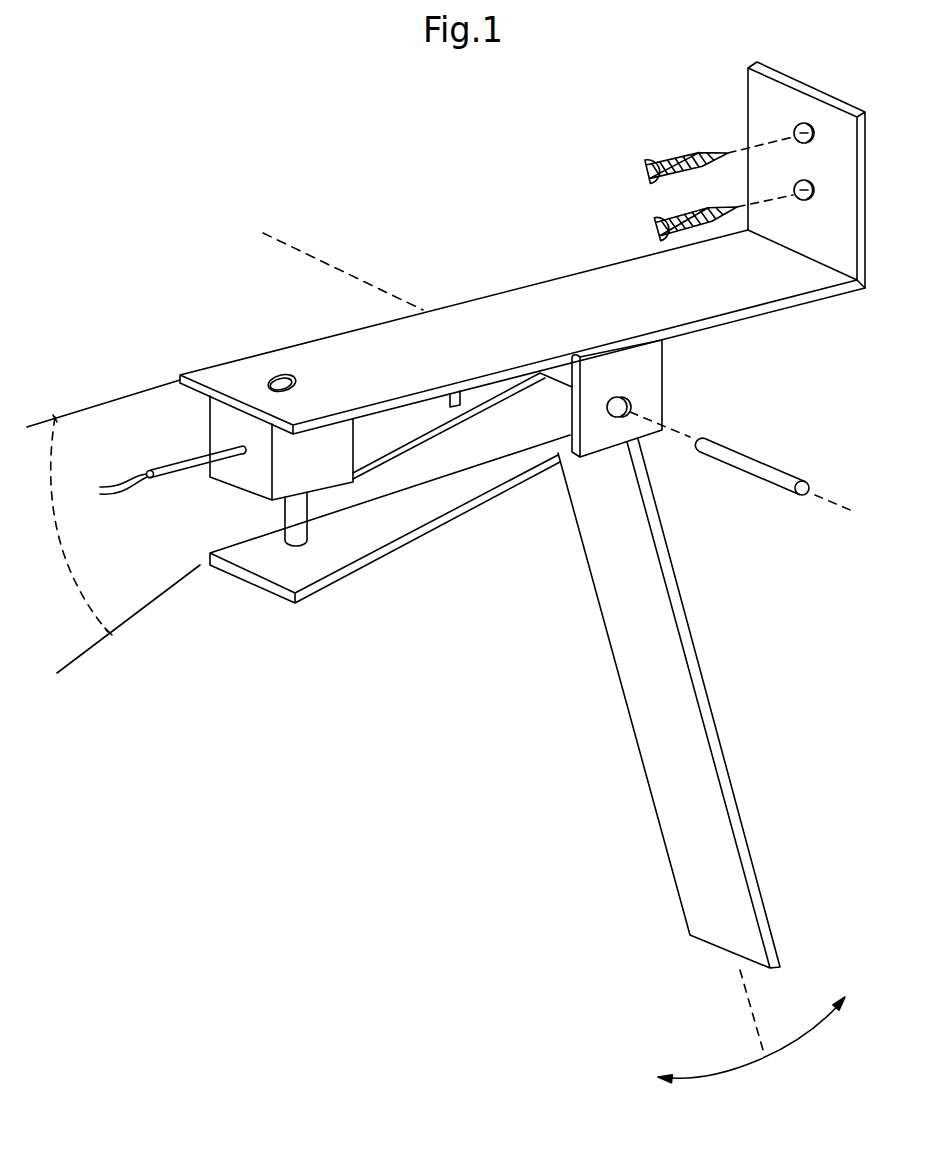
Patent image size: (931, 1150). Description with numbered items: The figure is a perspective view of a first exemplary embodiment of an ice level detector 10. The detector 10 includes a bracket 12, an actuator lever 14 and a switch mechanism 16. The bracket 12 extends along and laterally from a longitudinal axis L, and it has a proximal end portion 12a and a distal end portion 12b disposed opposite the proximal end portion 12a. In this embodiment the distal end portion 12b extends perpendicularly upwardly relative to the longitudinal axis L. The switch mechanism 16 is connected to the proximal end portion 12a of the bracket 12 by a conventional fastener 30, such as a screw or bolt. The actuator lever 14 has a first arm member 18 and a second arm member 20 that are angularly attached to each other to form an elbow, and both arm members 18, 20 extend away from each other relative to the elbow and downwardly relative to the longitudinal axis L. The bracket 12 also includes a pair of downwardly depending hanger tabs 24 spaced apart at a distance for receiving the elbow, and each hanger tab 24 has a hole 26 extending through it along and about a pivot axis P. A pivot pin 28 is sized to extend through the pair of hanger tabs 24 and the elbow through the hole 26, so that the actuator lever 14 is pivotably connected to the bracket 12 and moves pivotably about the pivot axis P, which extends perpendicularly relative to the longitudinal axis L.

The ice level detector 10 is at (403, 198).
The bracket 12 is at (508, 310).
The proximal end portion 12a is at (370, 330).
The distal end portion 12b is at (830, 112).
The actuator lever 14 is at (612, 562).
The switch mechanism 16 is at (243, 475).
The first arm member 18 is at (387, 515).
The second arm member 20 is at (650, 718).
The hanger tabs 24 is at (450, 400).
The hole 26 is at (662, 372).
The pivot pin 28 is at (750, 455).
The fastener 30 is at (296, 383).
The pivot axis P is at (292, 248).
The longitudinal axis L is at (105, 400).